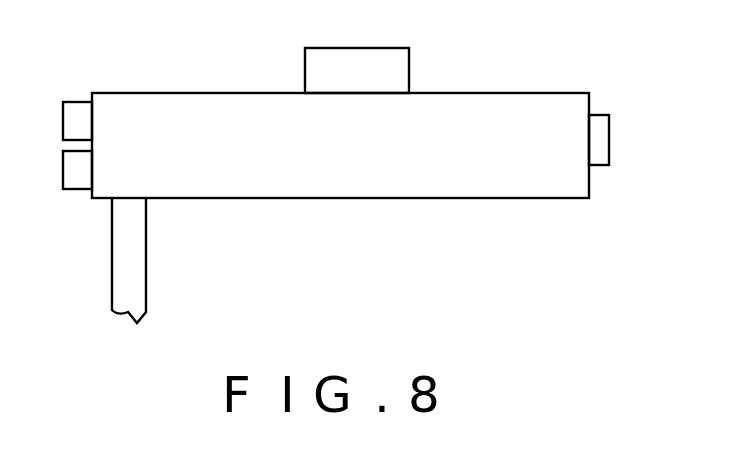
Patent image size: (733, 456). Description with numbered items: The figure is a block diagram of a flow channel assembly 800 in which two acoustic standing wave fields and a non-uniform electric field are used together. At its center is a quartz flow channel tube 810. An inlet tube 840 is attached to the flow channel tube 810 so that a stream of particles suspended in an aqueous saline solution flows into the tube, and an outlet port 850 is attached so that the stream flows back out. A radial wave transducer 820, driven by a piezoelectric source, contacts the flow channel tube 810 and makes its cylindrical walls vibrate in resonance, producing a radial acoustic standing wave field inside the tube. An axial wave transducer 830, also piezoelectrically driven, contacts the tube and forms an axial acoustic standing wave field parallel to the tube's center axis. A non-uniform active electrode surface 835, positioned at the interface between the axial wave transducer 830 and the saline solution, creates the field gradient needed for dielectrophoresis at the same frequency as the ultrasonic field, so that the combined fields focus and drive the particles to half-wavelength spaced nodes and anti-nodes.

The flow channel assembly 800 is at (352, 172).
The flow channel tube 810 is at (363, 198).
The radial wave transducer 820 is at (409, 72).
The axial wave transducer 830 is at (63, 127).
The non-uniform active electrode surface 835 is at (62, 173).
The inlet tube 840 is at (146, 241).
The outlet port 850 is at (609, 152).